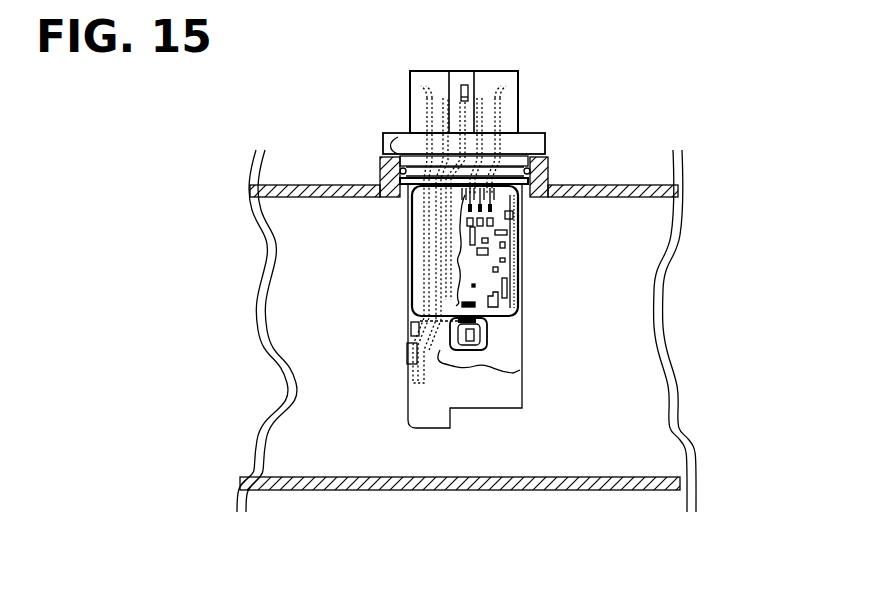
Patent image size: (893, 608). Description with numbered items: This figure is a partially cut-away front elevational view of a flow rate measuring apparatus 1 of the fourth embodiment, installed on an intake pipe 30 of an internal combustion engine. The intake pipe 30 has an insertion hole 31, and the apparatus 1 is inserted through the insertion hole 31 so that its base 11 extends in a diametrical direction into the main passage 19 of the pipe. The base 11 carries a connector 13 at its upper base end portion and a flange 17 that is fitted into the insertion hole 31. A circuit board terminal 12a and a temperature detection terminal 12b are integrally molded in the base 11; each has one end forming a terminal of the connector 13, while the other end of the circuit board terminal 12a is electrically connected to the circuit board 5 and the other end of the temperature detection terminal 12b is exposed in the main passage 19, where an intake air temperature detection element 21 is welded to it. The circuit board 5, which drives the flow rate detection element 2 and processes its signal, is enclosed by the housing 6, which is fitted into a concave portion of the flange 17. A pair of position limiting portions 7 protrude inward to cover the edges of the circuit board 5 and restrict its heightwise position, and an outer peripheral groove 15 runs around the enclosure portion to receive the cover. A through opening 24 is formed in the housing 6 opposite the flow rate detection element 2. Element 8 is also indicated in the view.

The flow rate measuring apparatus 1 is at (535, 383).
The flow rate detection element 2 is at (470, 345).
The circuit board 5 is at (490, 263).
The housing 6 is at (433, 400).
The position limiting portions 7 is at (505, 219).
The terminal 8 is at (492, 205).
The base 11 is at (383, 135).
The circuit board terminal 12a is at (500, 97).
The temperature detection terminal 12b is at (427, 97).
The connector 13 is at (519, 98).
The outer peripheral groove 15 is at (518, 288).
The flange 17 is at (532, 143).
The main passage 19 is at (598, 440).
The intake air temperature detection element 21 is at (407, 358).
The through opening 24 is at (490, 340).
The intake pipe 30 is at (620, 185).
The insertion hole 31 is at (400, 197).